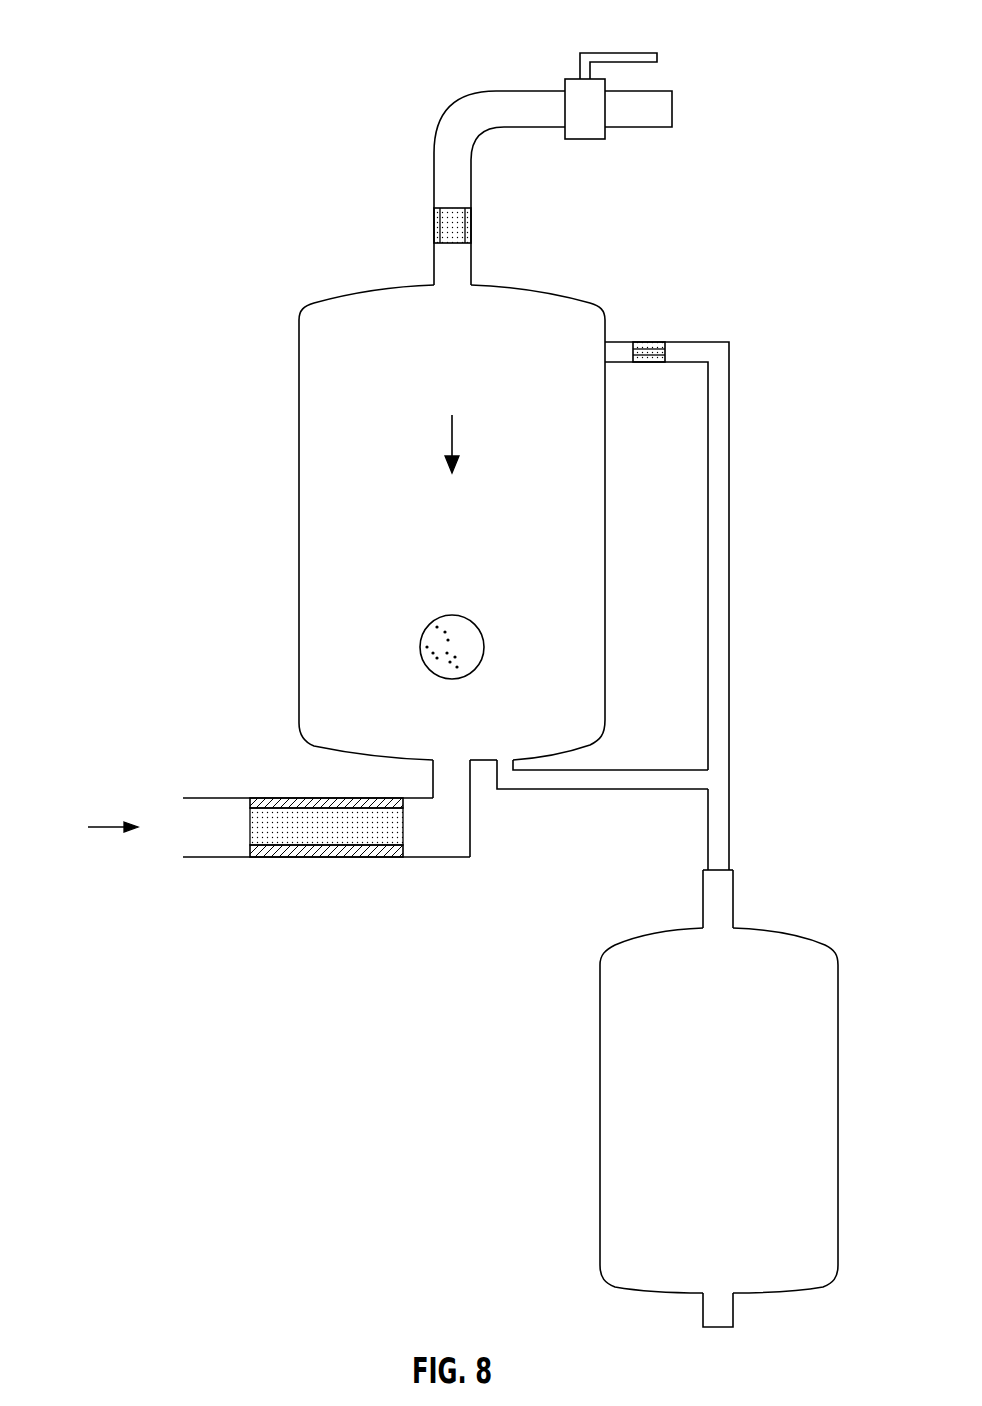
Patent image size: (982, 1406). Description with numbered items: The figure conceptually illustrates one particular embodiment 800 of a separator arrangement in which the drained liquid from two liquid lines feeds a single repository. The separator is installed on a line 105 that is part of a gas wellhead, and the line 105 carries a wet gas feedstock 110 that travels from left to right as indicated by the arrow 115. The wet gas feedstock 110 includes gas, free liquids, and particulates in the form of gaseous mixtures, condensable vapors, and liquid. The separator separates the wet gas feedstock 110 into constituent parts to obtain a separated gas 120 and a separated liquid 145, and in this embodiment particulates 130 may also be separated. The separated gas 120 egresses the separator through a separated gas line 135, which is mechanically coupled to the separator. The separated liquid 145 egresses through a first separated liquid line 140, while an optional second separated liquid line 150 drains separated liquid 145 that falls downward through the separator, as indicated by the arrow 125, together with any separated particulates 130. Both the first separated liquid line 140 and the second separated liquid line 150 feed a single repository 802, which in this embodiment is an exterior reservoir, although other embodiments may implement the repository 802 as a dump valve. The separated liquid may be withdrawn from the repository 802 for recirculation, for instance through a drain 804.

The embodiment 800 is at (118, 42).
The line 105 is at (203, 798).
The wet gas feedstock 110 is at (333, 843).
The arrow 115 is at (105, 822).
The separated gas 120 is at (440, 222).
The arrow 125 is at (455, 445).
The particulates 130 is at (458, 667).
The separated gas line 135 is at (460, 103).
The first separated liquid line 140 is at (695, 342).
The separated liquid 145 is at (643, 342).
The second separated liquid line 150 is at (618, 789).
The repository 802 is at (777, 930).
The drain 804 is at (735, 1308).